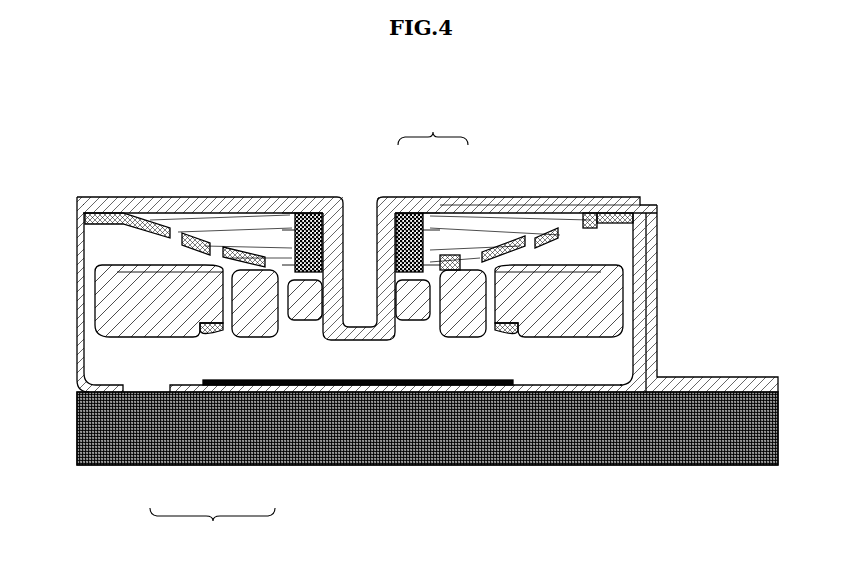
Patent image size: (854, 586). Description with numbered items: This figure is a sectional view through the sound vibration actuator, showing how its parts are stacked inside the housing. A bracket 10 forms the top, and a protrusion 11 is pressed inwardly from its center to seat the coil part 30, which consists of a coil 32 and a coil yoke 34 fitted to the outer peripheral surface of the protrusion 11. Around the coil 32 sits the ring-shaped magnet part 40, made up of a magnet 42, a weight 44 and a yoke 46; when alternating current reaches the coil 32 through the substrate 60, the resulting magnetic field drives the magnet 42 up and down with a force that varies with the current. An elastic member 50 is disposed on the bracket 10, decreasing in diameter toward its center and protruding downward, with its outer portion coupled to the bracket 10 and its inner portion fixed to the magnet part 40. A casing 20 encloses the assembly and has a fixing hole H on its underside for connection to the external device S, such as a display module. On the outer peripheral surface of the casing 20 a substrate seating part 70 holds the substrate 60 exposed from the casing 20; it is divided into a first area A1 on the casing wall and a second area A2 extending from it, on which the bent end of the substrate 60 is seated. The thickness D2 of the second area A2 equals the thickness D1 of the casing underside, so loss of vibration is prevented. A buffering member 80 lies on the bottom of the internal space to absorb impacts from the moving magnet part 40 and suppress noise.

The bracket 10 is at (233, 197).
The protrusion 11 is at (330, 222).
The casing 20 is at (352, 388).
The coil part 30 is at (433, 126).
The coil 32 is at (408, 215).
The coil yoke 34 is at (427, 290).
The magnet part 40 is at (212, 527).
The magnet 42 is at (252, 338).
The weight 44 is at (168, 337).
The yoke 46 is at (223, 326).
The elastic member 50 is at (600, 215).
The substrate 60 is at (657, 229).
The substrate seating part 70 is at (645, 324).
The buffering member 80 is at (420, 382).
The fixing hole H is at (142, 392).
The external device S is at (592, 466).
The first area A1 is at (660, 281).
The second area A2 is at (718, 378).
The thickness of the underside of the casing D1 is at (77, 392).
The thickness of the second area D2 is at (790, 363).